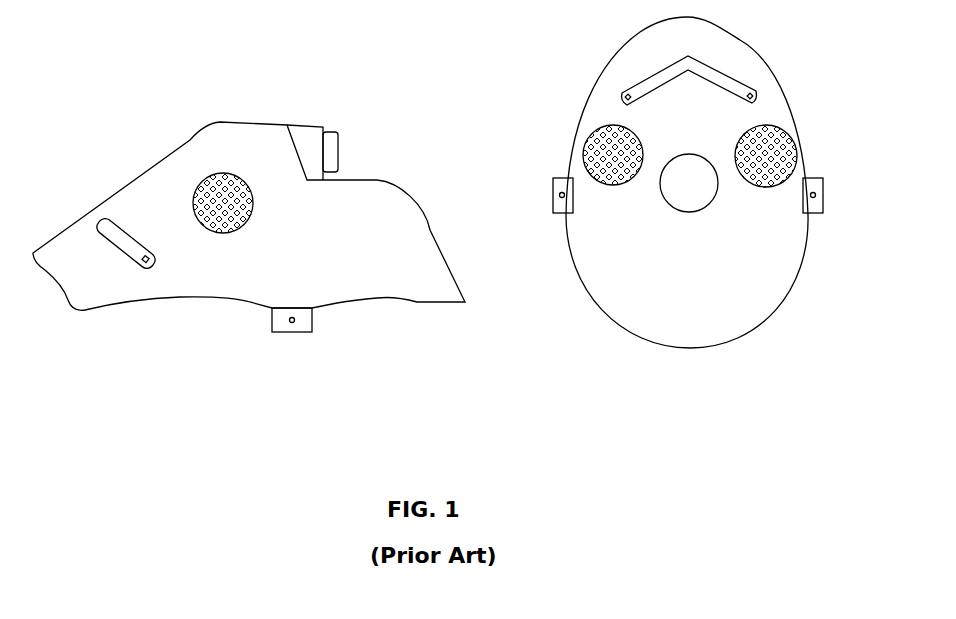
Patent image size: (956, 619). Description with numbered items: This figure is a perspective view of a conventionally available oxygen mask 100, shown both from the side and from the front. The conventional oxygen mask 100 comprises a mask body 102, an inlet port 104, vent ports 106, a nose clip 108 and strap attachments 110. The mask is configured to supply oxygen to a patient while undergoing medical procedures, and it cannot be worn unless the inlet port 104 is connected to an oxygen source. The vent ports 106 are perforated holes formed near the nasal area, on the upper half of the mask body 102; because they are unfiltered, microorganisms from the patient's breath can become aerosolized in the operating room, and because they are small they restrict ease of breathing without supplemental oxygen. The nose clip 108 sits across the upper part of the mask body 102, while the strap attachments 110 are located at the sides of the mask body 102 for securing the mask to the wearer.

The conventional oxygen mask 100 is at (527, 365).
The mask body 102 is at (230, 288).
The inlet port 104 is at (323, 130).
The vent ports 106 is at (210, 187).
The nose clip 108 is at (103, 217).
The strap attachments 110 is at (312, 325).